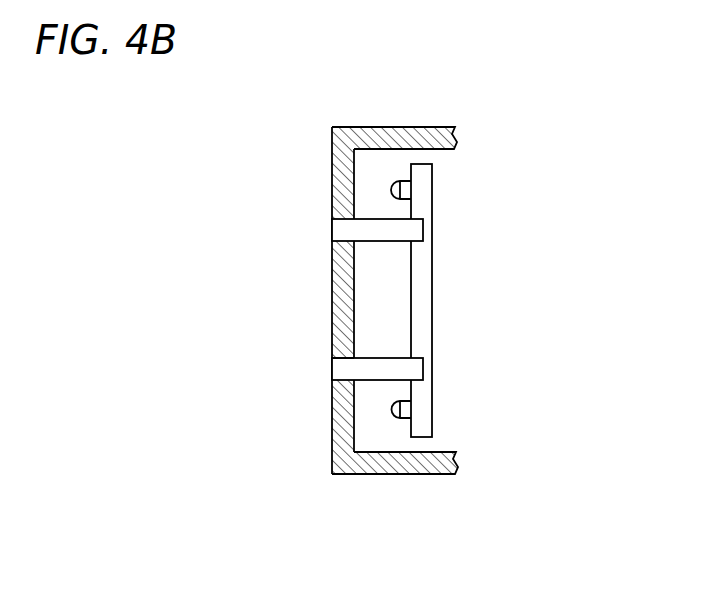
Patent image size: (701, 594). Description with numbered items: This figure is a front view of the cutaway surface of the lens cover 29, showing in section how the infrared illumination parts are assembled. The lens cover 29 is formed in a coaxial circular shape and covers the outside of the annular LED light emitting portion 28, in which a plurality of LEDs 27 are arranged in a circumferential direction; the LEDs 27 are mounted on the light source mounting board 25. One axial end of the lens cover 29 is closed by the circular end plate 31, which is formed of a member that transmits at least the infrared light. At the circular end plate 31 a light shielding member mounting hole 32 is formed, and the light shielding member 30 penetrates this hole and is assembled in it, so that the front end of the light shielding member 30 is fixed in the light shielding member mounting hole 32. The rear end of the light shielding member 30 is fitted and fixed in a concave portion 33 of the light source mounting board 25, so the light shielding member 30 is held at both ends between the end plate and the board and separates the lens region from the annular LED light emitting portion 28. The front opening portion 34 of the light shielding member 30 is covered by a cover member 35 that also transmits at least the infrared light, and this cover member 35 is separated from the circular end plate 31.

The light source mounting board 25 is at (433, 261).
The LEDs 27 is at (394, 183).
The annular LED light emitting portion 28 is at (389, 207).
The lens cover 29 is at (353, 127).
The light shielding member 30 is at (376, 382).
The circular end plate 31 is at (332, 432).
The light shielding member mounting hole 32 is at (345, 233).
The concave portion 33 is at (411, 362).
The front opening portion 34 is at (343, 357).
The cover member 35 is at (332, 297).